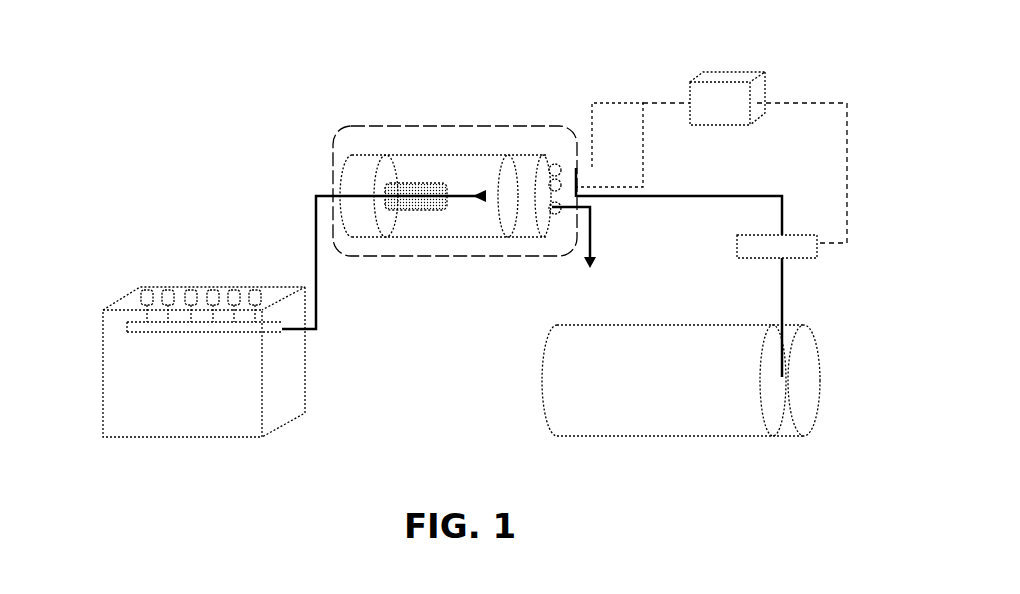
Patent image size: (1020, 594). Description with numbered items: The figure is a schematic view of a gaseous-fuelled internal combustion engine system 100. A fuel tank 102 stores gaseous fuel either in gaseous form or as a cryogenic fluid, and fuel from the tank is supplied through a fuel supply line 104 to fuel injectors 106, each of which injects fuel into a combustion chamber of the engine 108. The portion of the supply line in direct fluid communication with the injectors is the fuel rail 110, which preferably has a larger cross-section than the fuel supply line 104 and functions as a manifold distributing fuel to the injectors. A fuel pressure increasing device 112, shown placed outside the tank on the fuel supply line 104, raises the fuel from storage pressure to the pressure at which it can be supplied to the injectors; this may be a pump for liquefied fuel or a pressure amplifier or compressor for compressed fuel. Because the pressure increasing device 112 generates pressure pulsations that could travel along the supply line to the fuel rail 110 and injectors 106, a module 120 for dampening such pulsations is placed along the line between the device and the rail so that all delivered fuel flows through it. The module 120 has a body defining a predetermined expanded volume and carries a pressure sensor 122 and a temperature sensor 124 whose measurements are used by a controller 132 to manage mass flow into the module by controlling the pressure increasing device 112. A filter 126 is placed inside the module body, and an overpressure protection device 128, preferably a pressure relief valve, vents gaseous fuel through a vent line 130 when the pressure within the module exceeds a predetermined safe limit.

The engine system 100 is at (341, 57).
The fuel tank 102 is at (683, 423).
The fuel supply line 104 is at (717, 192).
The fuel injectors 106 is at (190, 290).
The engine 108 is at (280, 412).
The fuel rail 110 is at (130, 327).
The fuel pressure increasing device 112 is at (800, 250).
The module 120 is at (482, 124).
The pressure sensor 122 is at (558, 164).
The temperature sensor 124 is at (560, 178).
The filter 126 is at (427, 210).
The overpressure protection device 128 is at (557, 215).
The vent line 130 is at (596, 232).
The controller 132 is at (735, 80).